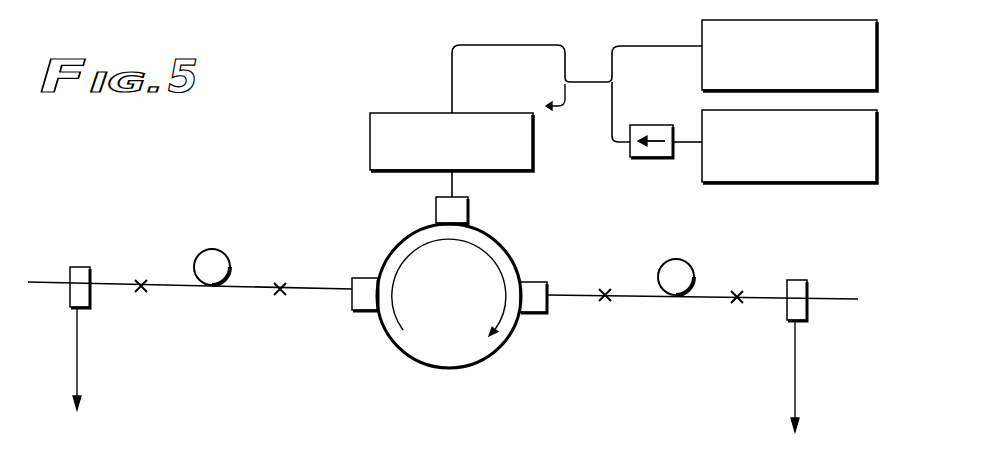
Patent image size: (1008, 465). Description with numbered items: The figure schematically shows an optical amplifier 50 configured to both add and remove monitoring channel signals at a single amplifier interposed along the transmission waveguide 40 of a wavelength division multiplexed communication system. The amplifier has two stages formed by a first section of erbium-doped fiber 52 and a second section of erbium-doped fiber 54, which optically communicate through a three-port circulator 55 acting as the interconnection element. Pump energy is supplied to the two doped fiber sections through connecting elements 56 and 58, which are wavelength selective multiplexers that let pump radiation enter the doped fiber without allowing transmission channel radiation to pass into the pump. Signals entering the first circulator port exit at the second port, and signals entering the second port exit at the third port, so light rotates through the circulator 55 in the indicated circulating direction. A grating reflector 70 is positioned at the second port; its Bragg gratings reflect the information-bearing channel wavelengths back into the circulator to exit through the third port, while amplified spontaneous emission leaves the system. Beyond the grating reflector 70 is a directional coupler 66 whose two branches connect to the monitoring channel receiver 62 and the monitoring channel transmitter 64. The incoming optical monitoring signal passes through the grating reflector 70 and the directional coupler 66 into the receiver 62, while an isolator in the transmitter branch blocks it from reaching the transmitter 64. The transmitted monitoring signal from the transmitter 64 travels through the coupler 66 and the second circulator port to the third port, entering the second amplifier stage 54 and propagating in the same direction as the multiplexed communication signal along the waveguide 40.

The waveguide 40 is at (62, 247).
The optical amplifier 50 is at (296, 161).
The first section of erbium-doped fiber 52 is at (233, 265).
The second section of erbium-doped fiber 54 is at (693, 277).
The circulator 55 is at (507, 247).
The connecting element 56 is at (80, 267).
The connecting element 58 is at (817, 262).
The monitoring channel receiver 62 is at (839, 1).
The monitoring channel transmitter 64 is at (843, 182).
The directional coupler 66 is at (587, 81).
The grating reflector 70 is at (412, 85).